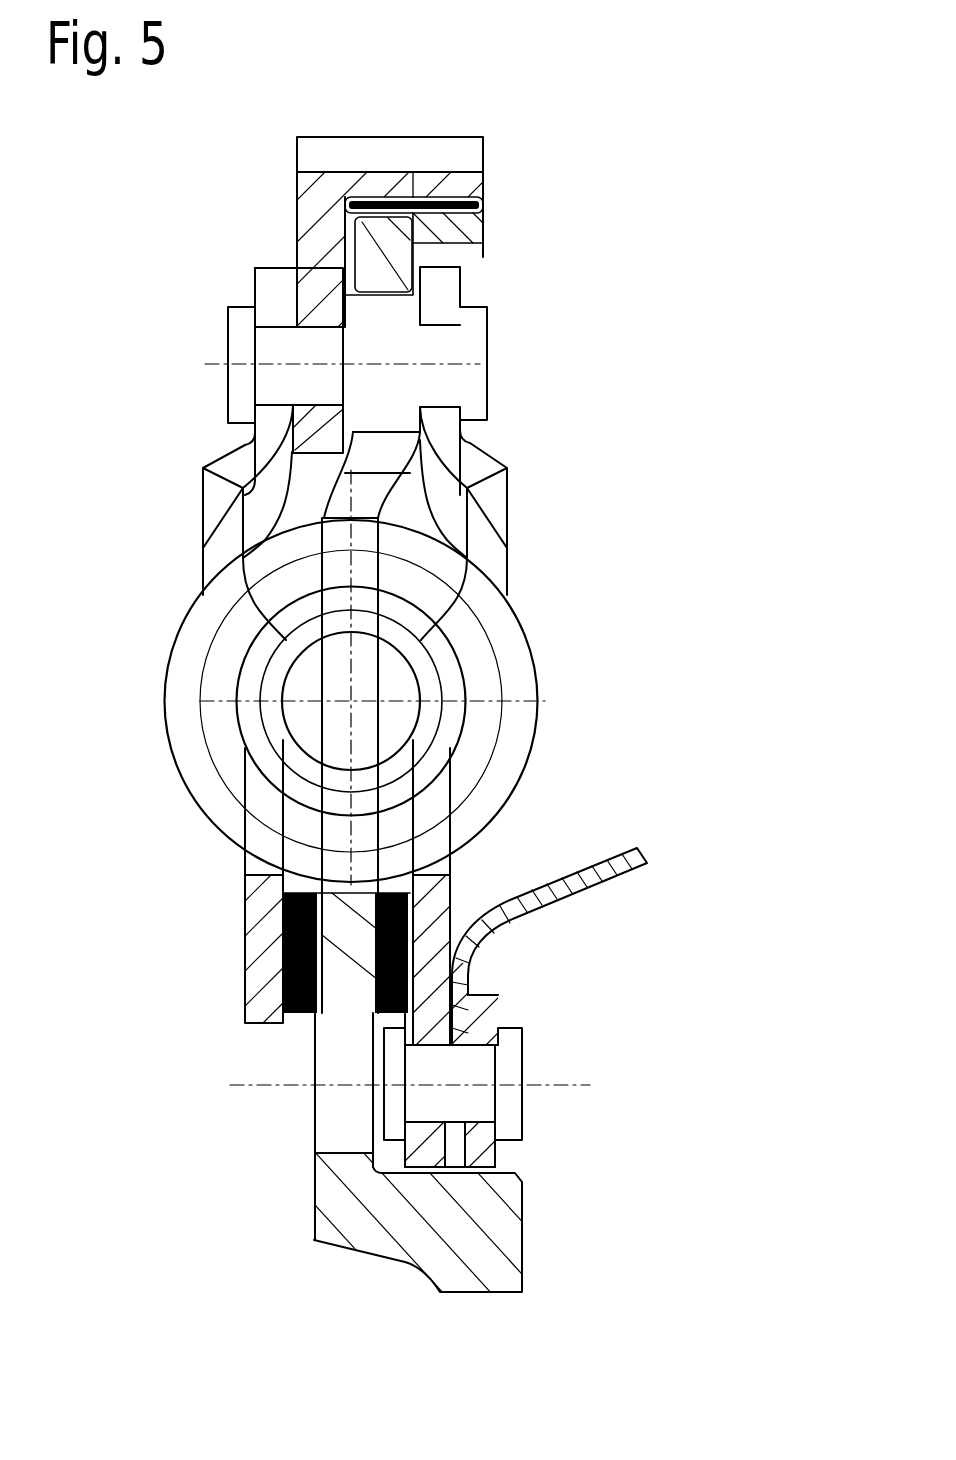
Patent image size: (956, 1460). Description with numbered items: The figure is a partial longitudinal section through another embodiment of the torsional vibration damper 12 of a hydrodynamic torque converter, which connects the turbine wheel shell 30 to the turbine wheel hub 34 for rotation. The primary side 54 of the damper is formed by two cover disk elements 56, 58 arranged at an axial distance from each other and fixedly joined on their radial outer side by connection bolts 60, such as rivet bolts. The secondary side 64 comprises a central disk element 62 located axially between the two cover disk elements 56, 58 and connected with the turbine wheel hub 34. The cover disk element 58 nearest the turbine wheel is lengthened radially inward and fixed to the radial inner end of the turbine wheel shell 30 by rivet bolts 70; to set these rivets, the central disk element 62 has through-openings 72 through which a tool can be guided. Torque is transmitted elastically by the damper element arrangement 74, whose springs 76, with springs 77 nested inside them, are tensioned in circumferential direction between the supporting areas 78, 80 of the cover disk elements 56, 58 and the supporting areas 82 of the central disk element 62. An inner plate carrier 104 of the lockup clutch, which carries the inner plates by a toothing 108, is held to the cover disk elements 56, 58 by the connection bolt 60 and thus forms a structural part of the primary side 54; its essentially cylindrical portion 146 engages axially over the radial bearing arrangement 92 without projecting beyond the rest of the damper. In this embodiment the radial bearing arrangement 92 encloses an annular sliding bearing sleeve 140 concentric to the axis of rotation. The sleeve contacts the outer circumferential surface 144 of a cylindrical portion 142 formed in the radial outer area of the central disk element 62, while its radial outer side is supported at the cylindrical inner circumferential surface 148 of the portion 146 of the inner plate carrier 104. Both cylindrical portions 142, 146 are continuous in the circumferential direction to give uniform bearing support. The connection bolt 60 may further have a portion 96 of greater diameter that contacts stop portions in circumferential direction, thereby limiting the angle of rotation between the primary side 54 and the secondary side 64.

The torsional vibration damper 12 is at (100, 789).
The turbine wheel shell 30 is at (592, 890).
The turbine wheel hub 34 is at (522, 1245).
The primary side 54 is at (178, 339).
The cover disk element 56 is at (212, 508).
The cover disk element 58 is at (505, 492).
The connection bolt 60 is at (283, 380).
The central disk element 62 is at (346, 992).
The secondary side 64 is at (256, 1112).
The rivet bolt 70 is at (468, 1108).
The through-opening 72 is at (330, 1130).
The damper element arrangement 74 is at (132, 710).
The spring 76 is at (197, 783).
The spring 77 is at (545, 701).
The supporting area 78 is at (223, 606).
The supporting area 80 is at (500, 570).
The supporting area 82 is at (357, 677).
The radial bearing arrangement 92 is at (520, 188).
The portion with greater diameter 96 is at (397, 400).
The inner plate carrier 104 is at (297, 192).
The toothing 108 is at (318, 145).
The sliding bearing sleeve 140 is at (393, 207).
The cylindrical portion 142 is at (462, 230).
The outer circumferential surface 144 is at (470, 220).
The cylindrical portion 146 is at (435, 182).
The inner circumferential surface 148 is at (400, 245).